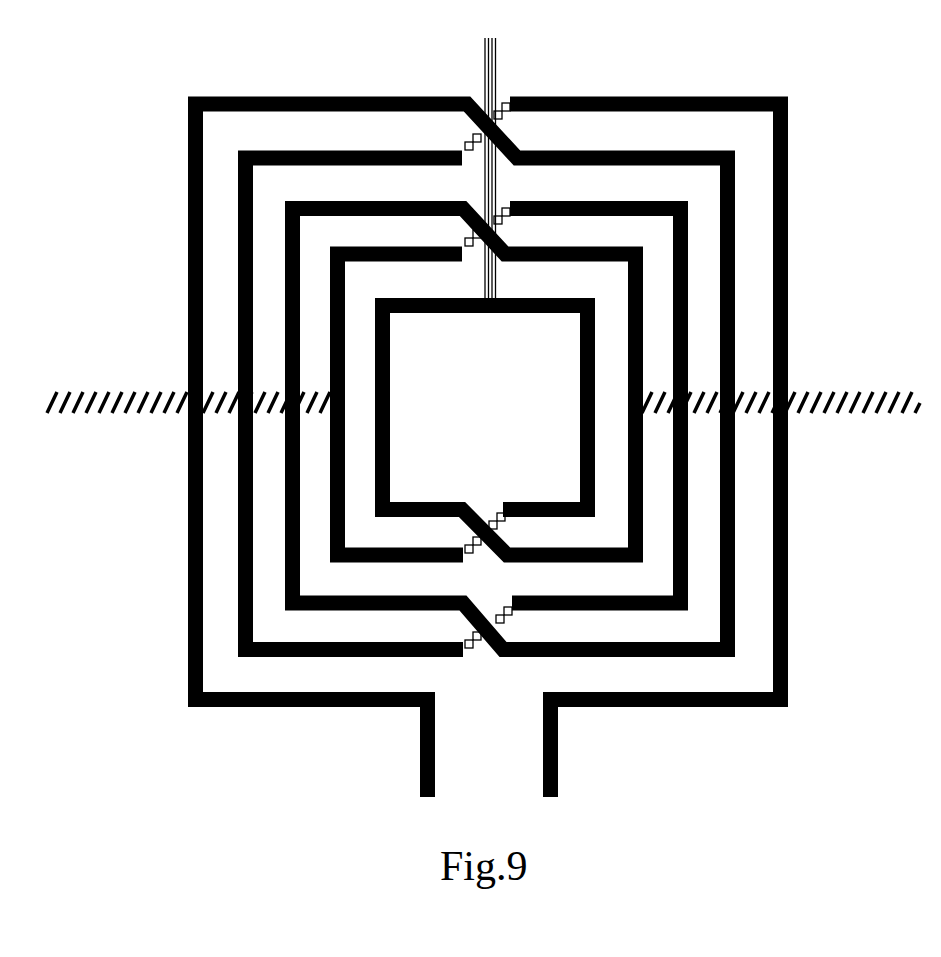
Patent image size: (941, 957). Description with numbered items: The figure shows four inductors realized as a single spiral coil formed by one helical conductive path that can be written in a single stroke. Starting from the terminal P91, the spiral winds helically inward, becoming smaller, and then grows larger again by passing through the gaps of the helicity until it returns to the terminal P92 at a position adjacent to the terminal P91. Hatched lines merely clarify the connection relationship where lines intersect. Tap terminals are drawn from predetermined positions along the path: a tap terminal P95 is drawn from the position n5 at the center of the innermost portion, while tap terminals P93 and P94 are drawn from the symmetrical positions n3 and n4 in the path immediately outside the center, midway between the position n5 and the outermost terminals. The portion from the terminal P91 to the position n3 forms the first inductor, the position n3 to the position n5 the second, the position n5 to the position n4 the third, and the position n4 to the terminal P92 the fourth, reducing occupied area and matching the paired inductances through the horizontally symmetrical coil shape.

The terminal P91 is at (402, 744).
The terminal P92 is at (576, 744).
The tap terminal P93 is at (781, 389).
The tap terminal P94 is at (193, 384).
The tap terminal P95 is at (511, 168).
The position n3 is at (595, 406).
The position n4 is at (383, 404).
The position n5 is at (485, 408).